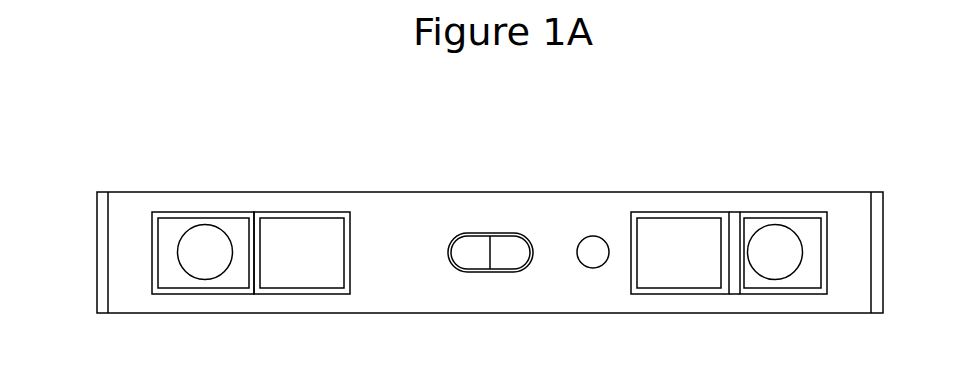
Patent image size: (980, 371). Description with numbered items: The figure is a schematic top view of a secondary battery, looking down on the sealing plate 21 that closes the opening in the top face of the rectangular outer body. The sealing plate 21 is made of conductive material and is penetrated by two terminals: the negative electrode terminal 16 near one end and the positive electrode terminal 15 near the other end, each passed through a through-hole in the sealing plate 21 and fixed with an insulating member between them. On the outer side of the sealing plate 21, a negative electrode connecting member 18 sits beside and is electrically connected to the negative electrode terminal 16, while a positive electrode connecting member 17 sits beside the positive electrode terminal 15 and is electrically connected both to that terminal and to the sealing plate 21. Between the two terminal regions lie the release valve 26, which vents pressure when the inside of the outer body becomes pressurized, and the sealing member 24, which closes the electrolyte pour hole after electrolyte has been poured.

The sealing plate 21 is at (526, 192).
The negative electrode terminal 16 is at (208, 231).
The negative electrode connecting member 18 is at (306, 228).
The release valve 26 is at (475, 241).
The sealing member 24 is at (594, 238).
The positive electrode connecting member 17 is at (685, 245).
The positive electrode terminal 15 is at (777, 232).